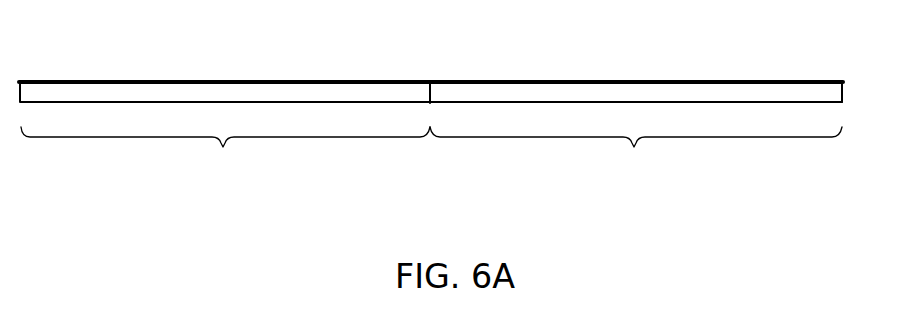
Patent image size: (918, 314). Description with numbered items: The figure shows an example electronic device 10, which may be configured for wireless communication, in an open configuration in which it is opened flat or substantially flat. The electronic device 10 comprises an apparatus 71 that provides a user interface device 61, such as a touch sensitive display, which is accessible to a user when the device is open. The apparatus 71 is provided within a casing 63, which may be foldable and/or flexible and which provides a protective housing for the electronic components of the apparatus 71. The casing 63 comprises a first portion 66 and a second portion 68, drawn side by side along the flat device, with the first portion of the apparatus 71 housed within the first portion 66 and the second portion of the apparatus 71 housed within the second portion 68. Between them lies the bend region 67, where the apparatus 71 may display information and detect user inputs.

The electronic device 10 is at (842, 90).
The user interface device 61 is at (53, 80).
The apparatus 71 is at (825, 81).
The casing 63 is at (482, 103).
The first portion 66 is at (225, 154).
The bend region 67 is at (427, 104).
The second portion 68 is at (636, 154).